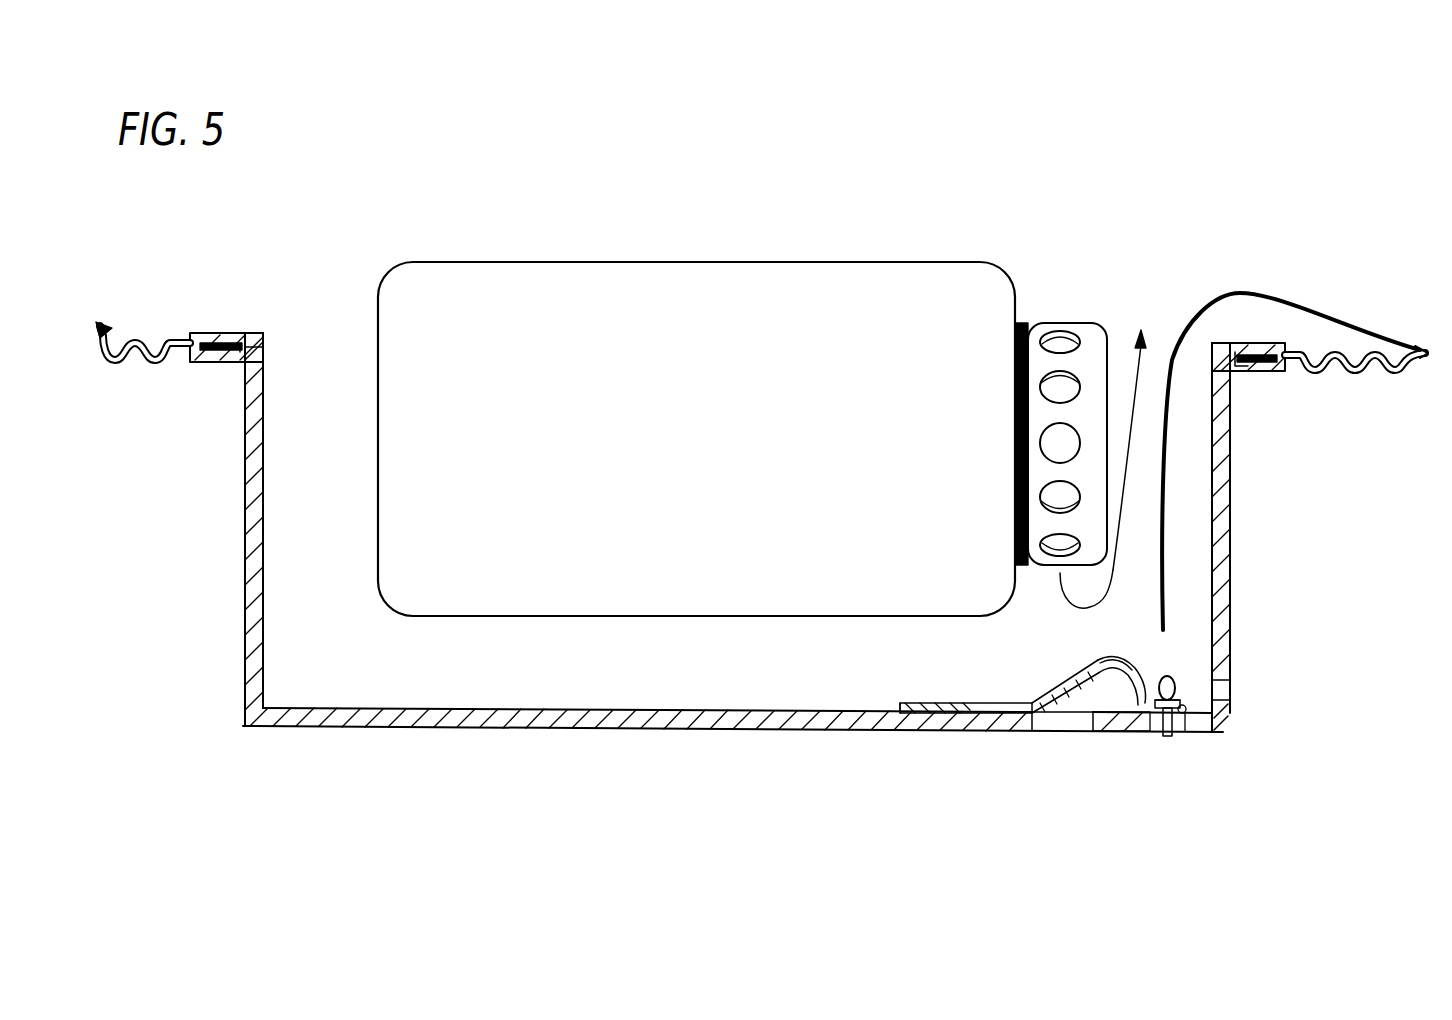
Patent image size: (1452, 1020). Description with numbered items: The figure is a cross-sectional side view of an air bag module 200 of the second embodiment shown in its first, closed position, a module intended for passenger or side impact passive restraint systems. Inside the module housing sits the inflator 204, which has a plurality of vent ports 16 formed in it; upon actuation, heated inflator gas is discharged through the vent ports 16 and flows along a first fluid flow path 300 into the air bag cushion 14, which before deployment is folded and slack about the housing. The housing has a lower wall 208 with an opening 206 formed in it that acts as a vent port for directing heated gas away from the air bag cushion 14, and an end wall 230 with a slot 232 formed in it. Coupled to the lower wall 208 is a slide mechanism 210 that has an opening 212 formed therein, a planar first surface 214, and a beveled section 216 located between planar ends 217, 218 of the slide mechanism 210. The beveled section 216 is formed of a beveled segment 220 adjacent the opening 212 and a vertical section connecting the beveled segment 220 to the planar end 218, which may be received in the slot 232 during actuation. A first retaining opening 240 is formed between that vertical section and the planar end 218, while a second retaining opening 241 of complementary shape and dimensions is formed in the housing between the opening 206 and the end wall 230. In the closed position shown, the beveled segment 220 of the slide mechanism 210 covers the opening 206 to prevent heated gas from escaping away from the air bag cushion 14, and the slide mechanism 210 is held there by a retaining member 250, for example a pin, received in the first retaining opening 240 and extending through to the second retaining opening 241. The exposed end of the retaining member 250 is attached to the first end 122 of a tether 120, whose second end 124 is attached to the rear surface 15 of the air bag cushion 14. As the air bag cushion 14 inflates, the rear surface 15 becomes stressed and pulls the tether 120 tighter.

The air bag module 200 is at (859, 243).
The inflator 204 is at (647, 449).
The vent ports 16 is at (1048, 382).
The first fluid flow path 300 is at (1140, 365).
The tether 120 is at (1238, 292).
The second end of the tether 124 is at (1415, 348).
The rear surface of the air bag cushion 15 is at (1322, 352).
The air bag cushion 14 is at (130, 362).
The end wall 230 is at (1228, 548).
The slot 232 is at (1222, 704).
The lower wall 208 is at (932, 723).
The opening 206 is at (1090, 725).
The first retaining opening 240 is at (1132, 722).
The second retaining opening 241 is at (1158, 725).
The planar end 217 is at (900, 706).
The planar first surface 214 is at (931, 705).
The opening of the slide mechanism 212 is at (975, 705).
The slide mechanism 210 is at (1060, 690).
The beveled segment 220 is at (1096, 672).
The beveled section 216 is at (1099, 662).
The first end of the tether 122 is at (1160, 680).
The retaining member 250 is at (1178, 686).
The planar end 218 is at (1177, 712).